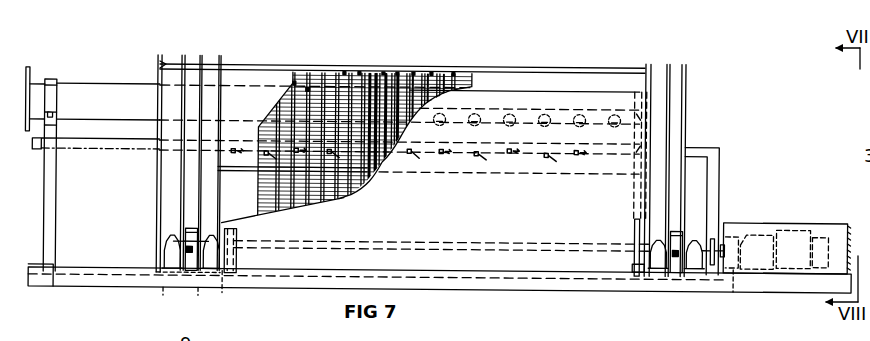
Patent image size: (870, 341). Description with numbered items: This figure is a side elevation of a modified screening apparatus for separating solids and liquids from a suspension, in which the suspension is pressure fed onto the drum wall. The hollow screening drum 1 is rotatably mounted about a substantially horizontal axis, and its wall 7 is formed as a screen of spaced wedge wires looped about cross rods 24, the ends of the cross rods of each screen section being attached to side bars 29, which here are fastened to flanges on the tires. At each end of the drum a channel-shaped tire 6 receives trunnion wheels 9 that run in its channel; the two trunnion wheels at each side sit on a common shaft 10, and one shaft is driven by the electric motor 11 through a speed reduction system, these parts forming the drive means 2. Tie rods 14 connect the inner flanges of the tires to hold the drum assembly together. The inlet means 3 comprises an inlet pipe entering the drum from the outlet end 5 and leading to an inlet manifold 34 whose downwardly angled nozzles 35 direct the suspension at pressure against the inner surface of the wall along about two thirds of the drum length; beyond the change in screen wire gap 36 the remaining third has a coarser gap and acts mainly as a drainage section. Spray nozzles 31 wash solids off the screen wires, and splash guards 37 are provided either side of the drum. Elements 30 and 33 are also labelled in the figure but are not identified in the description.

The screening drum 1 is at (486, 56).
The drive means 2 is at (756, 208).
The inlet means 3 is at (120, 77).
The outlet end 5 is at (153, 211).
The tire 6 is at (188, 181).
The wall 7 is at (343, 78).
The trunnion wheels 9 is at (189, 258).
The common shaft 10 is at (512, 248).
The electric motor 11 is at (795, 230).
The tie rods 14 is at (560, 70).
The cross rods 24 is at (318, 75).
The side bars 29 is at (262, 172).
The lower shaft 30 is at (127, 148).
The nozzles 31 is at (548, 153).
The shaft 33 is at (99, 85).
The inlet manifold 34 is at (527, 108).
The manifold nozzles 35 is at (581, 112).
The change in screen wire gap 36 is at (363, 66).
The splash guards 37 is at (270, 230).